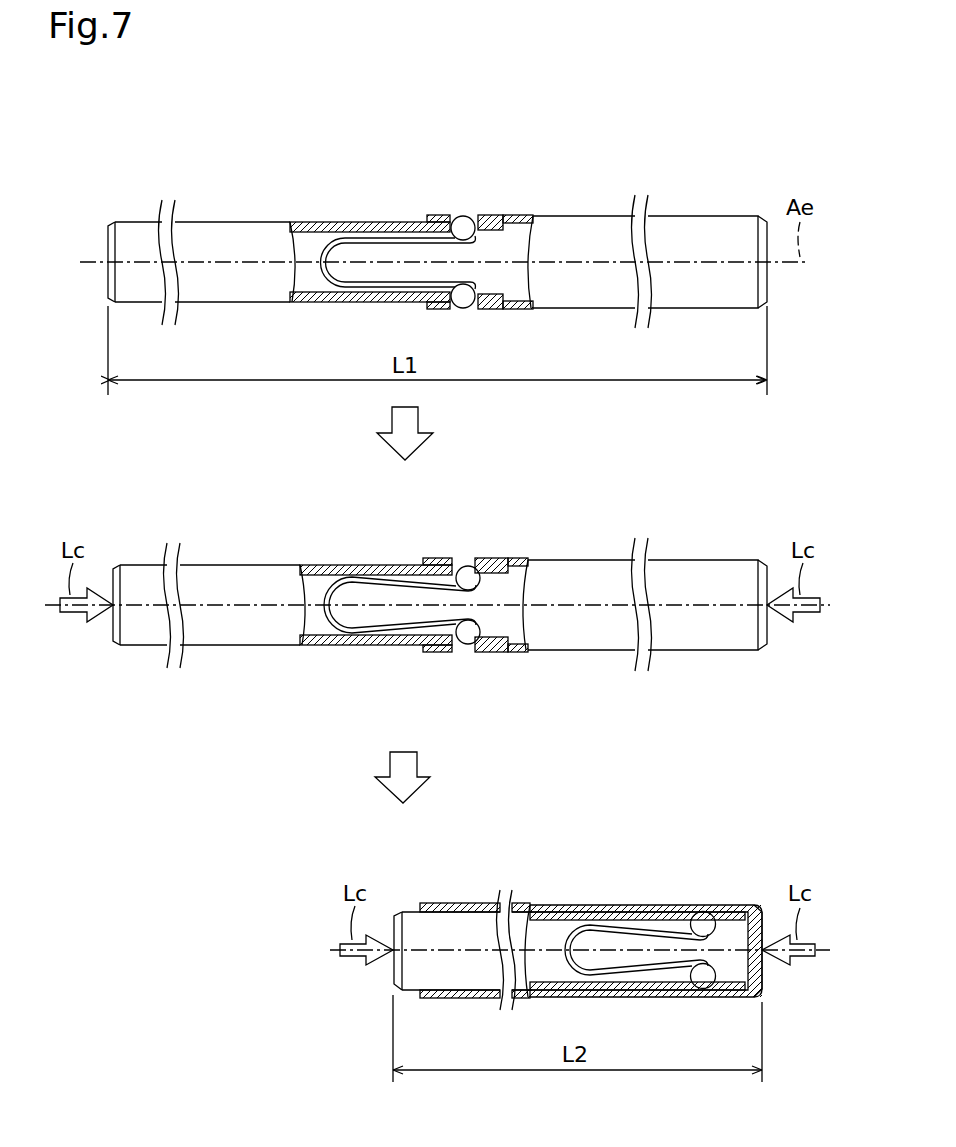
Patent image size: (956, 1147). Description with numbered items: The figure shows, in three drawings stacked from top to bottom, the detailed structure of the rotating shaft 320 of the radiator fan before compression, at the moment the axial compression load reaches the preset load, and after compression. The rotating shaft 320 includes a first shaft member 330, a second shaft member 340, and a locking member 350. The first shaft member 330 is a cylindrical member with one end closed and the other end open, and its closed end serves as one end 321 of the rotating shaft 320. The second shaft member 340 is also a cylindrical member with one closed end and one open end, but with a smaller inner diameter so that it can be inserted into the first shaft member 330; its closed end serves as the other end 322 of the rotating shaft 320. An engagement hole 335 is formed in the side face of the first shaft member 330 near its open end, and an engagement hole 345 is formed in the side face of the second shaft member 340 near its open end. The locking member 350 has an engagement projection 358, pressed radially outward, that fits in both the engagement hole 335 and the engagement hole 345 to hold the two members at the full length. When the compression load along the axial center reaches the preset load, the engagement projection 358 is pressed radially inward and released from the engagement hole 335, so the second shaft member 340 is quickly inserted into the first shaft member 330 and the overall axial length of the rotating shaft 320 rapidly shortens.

The rotating shaft 320 is at (680, 170).
The one end 321 is at (770, 290).
The other end 322 is at (105, 290).
The first shaft member 330 is at (707, 312).
The engagement hole 335 is at (474, 218).
The second shaft member 340 is at (247, 219).
The engagement hole 345 is at (460, 216).
The locking member 350 is at (318, 272).
The engagement projection 358 is at (463, 308).